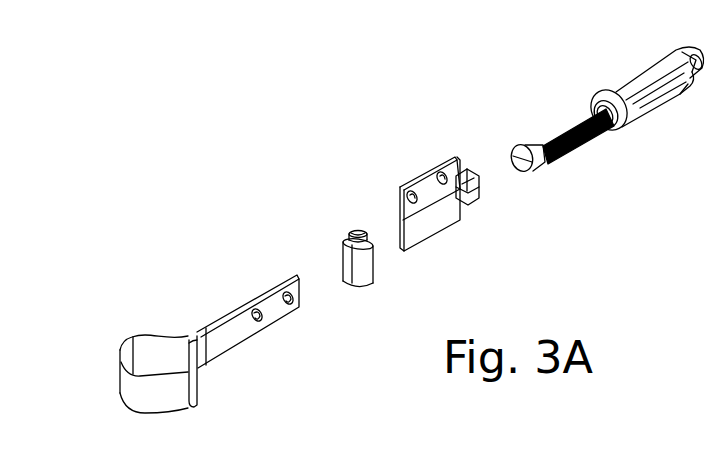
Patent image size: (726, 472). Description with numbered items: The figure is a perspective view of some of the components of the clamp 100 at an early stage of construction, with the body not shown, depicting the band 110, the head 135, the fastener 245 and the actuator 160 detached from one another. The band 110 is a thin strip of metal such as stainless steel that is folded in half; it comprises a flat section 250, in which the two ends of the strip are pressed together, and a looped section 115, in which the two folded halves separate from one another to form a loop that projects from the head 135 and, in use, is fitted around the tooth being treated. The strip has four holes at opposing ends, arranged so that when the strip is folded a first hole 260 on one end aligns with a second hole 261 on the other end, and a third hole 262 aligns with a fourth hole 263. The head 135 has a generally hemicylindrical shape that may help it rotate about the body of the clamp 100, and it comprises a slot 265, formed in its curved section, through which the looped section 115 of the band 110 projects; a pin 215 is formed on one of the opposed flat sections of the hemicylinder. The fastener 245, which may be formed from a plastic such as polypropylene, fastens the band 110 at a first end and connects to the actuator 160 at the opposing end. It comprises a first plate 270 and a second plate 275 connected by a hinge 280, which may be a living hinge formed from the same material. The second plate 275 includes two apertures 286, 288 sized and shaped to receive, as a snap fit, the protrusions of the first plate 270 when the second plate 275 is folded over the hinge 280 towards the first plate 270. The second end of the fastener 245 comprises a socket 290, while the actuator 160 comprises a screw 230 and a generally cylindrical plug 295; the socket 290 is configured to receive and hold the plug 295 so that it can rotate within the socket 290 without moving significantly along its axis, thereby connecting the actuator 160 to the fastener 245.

The clamp 100 is at (222, 102).
The band 110 is at (198, 337).
The looped section 115 is at (140, 350).
The head 135 is at (350, 233).
The actuator 160 is at (598, 85).
The pin 215 is at (360, 231).
The screw 230 is at (583, 141).
The fastener 245 is at (420, 171).
The flat section 250 is at (243, 322).
The first hole 260 is at (256, 318).
The second hole 261 is at (263, 318).
The third hole 262 is at (300, 297).
The fourth hole 263 is at (293, 302).
The slot 265 is at (348, 258).
The first plate 270 is at (438, 215).
The second plate 275 is at (458, 162).
The hinge 280 is at (404, 216).
The aperture 286 is at (398, 187).
The aperture 288 is at (440, 177).
The socket 290 is at (468, 199).
The plug 295 is at (521, 145).